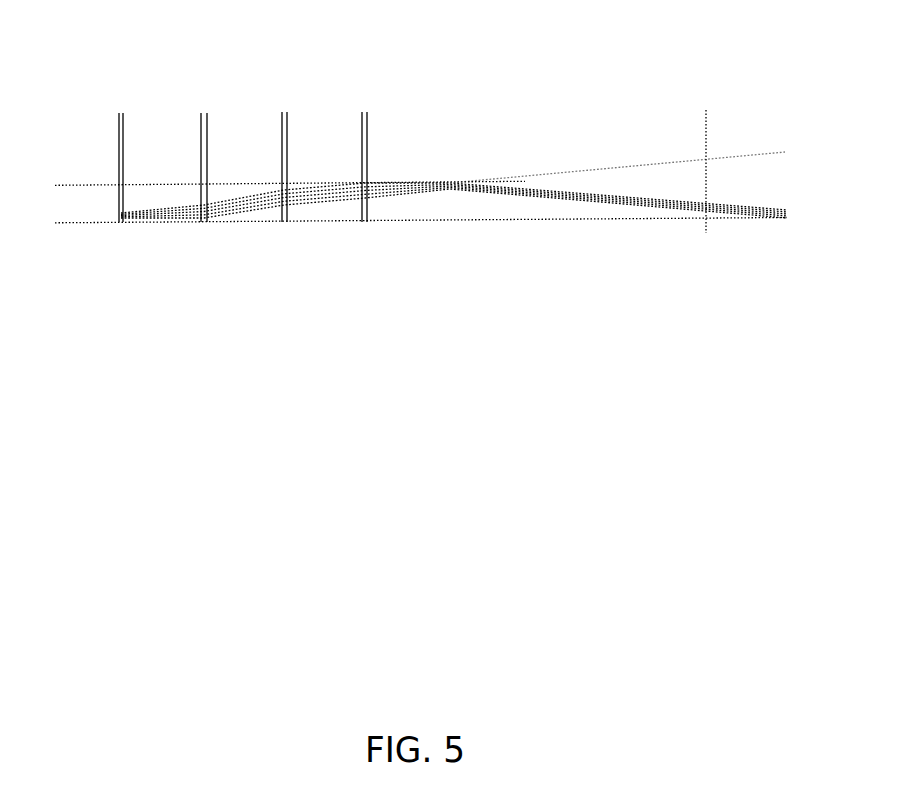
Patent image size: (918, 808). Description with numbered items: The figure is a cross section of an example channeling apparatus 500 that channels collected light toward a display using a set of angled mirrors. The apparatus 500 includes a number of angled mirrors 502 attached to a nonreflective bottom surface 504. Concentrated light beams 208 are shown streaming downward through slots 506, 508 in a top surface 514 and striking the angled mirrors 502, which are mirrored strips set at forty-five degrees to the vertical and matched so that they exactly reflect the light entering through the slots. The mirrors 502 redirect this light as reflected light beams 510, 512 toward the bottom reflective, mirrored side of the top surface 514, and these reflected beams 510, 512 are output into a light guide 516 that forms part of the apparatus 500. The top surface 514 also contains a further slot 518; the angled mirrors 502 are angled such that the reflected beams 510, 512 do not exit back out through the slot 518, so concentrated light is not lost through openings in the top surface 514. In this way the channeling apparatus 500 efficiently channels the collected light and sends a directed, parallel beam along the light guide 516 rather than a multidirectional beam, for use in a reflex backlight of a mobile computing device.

The channeling apparatus 500 is at (433, 720).
The angled mirrors 502 is at (206, 223).
The nonreflective bottom surface 504 is at (248, 223).
The slot 506 is at (203, 185).
The concentrated light beams 208 is at (204, 187).
The slot 508 is at (364, 175).
The reflected light beam 510 is at (376, 183).
The reflected light beam 512 is at (388, 189).
The top surface 514 is at (418, 183).
The light guide 516 is at (706, 130).
The slot 518 is at (472, 182).